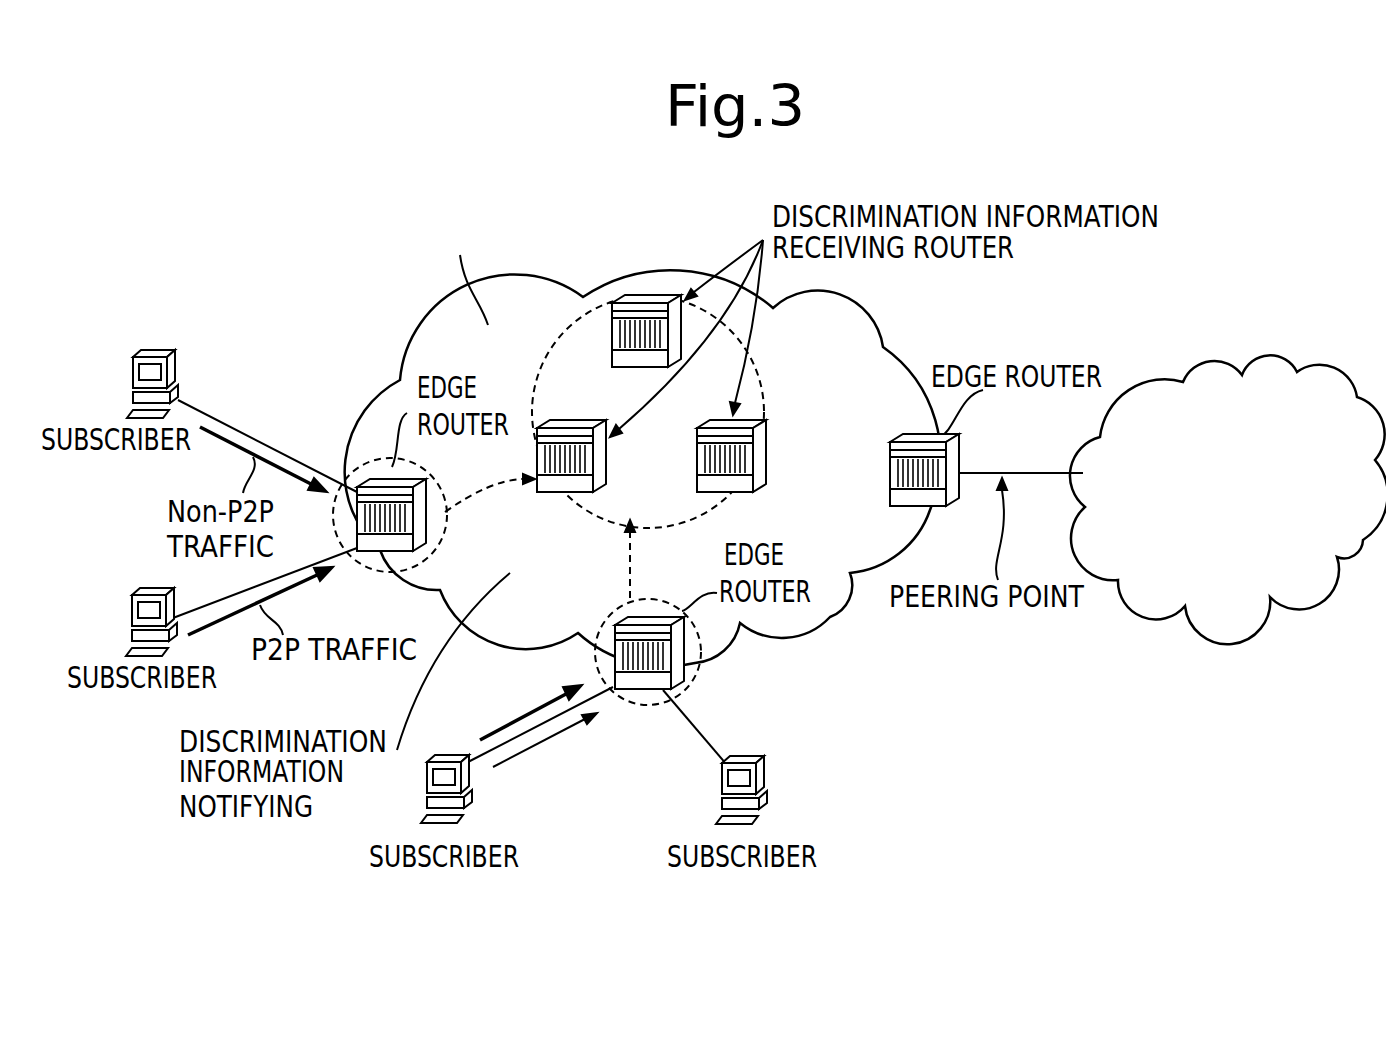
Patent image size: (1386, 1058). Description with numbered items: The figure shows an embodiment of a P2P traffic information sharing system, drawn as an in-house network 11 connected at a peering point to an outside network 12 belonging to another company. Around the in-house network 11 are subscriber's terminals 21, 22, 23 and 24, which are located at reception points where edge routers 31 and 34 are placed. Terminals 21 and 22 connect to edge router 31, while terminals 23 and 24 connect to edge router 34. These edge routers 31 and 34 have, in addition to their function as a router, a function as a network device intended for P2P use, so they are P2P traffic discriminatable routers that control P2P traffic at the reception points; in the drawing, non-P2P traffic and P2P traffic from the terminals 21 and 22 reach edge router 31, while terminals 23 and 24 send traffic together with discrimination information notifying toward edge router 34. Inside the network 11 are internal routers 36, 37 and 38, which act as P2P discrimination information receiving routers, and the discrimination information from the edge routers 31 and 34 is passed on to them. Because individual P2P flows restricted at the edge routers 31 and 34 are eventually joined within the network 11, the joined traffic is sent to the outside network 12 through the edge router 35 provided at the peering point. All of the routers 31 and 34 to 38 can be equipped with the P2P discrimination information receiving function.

The network 11 is at (877, 323).
The outside network 12 is at (1253, 358).
The subscriber's terminal 21 is at (133, 368).
The subscriber's terminal 22 is at (132, 613).
The subscriber's terminal 23 is at (447, 762).
The subscriber's terminal 24 is at (740, 763).
The edge router 31 is at (430, 493).
The edge router 34 is at (614, 640).
The edge router 35 is at (959, 447).
The internal router 36 is at (594, 480).
The internal router 37 is at (645, 368).
The internal router 38 is at (697, 437).